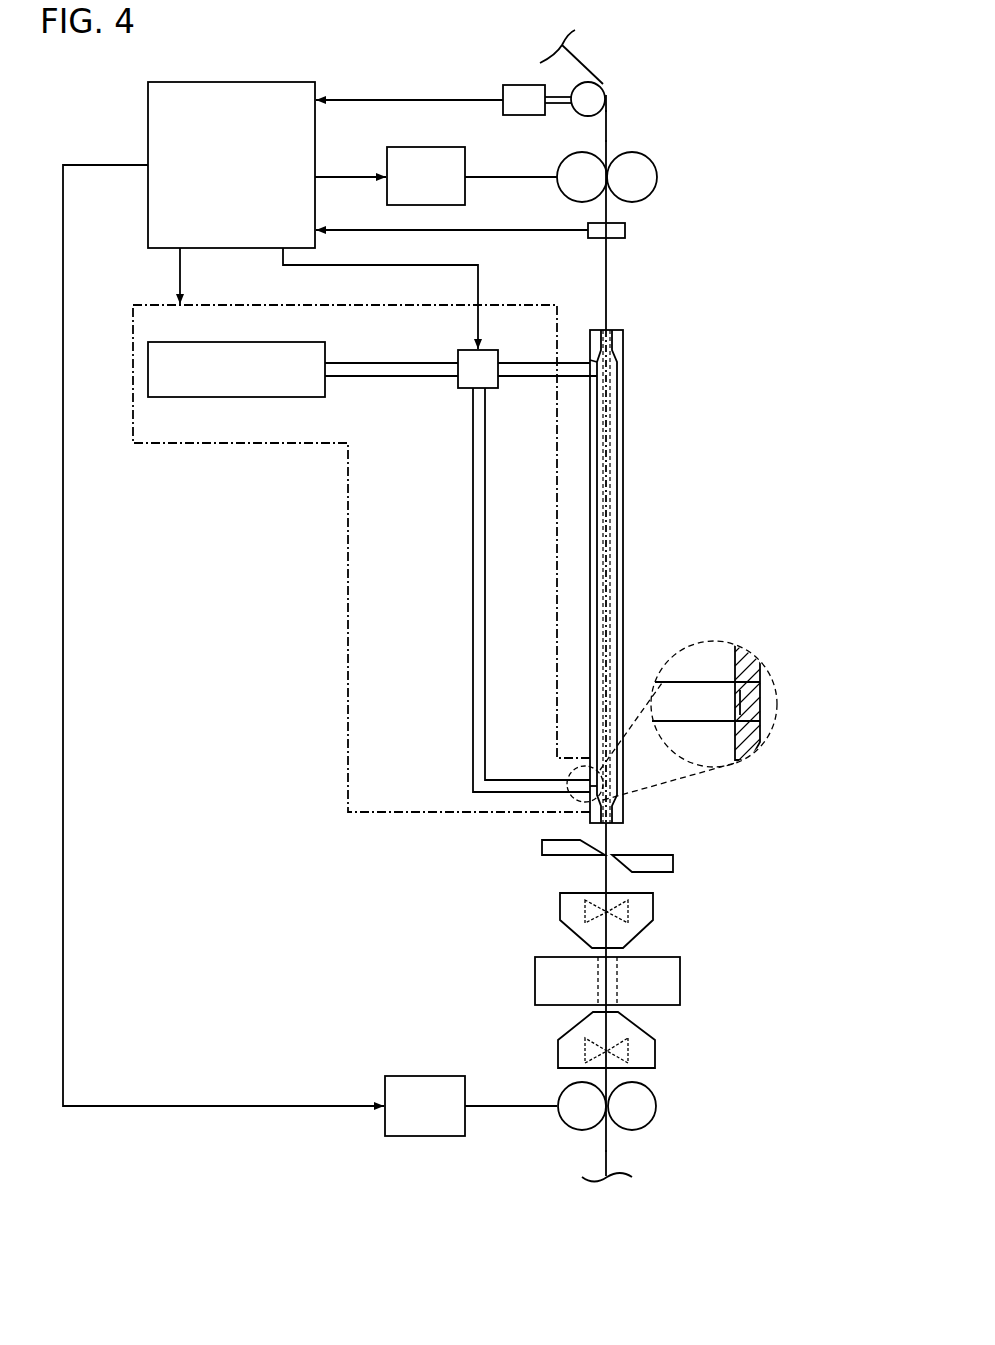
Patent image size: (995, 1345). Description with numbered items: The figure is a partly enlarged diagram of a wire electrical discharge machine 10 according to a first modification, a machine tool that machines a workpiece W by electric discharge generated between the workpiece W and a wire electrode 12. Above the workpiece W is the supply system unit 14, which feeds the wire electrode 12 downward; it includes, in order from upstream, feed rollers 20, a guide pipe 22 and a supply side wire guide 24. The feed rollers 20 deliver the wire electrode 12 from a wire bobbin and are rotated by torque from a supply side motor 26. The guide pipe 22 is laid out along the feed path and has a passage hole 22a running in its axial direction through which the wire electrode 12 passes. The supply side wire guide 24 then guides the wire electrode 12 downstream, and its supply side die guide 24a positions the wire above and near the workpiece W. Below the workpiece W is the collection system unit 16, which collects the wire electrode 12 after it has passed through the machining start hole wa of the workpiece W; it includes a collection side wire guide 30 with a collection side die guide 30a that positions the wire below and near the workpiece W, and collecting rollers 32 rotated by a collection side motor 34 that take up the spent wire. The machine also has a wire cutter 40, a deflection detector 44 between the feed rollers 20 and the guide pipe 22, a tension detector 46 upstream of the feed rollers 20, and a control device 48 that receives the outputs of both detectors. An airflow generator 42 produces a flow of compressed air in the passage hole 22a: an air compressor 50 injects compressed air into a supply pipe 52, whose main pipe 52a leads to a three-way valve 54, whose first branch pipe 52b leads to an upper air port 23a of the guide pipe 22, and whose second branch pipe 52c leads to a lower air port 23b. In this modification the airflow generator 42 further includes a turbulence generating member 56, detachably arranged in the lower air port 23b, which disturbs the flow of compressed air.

The wire electrical discharge machine 10 is at (660, 29).
The wire electrode 12 is at (610, 130).
The supply system unit 14 is at (692, 106).
The collection system unit 16 is at (716, 1131).
The feed rollers 20 is at (660, 181).
The guide pipe 22 is at (625, 415).
The passage hole 22a is at (597, 443).
The upper air port 23a is at (587, 357).
The lower air port 23b is at (728, 672).
The supply side wire guide 24 is at (653, 898).
The supply side die guide 24a is at (585, 910).
The supply side motor 26 is at (410, 147).
The collection side wire guide 30 is at (655, 1045).
The collection side die guide 30a is at (585, 1050).
The collecting rollers 32 is at (658, 1120).
The collection side motor 34 is at (412, 1076).
The wire cutter 40 is at (663, 851).
The airflow generator 42 is at (240, 450).
The deflection detector 44 is at (625, 230).
The tension detector 46 is at (516, 85).
The control device 48 is at (211, 82).
The air compressor 50 is at (190, 399).
The supply pipe 52 is at (408, 408).
The main pipe 52a is at (430, 378).
The first branch pipe 52b is at (518, 378).
The second branch pipe 52c is at (477, 495).
The three-way valve 54 is at (490, 351).
The turbulence generating member 56 is at (737, 700).
The workpiece W is at (680, 966).
The machining start hole wa is at (600, 990).